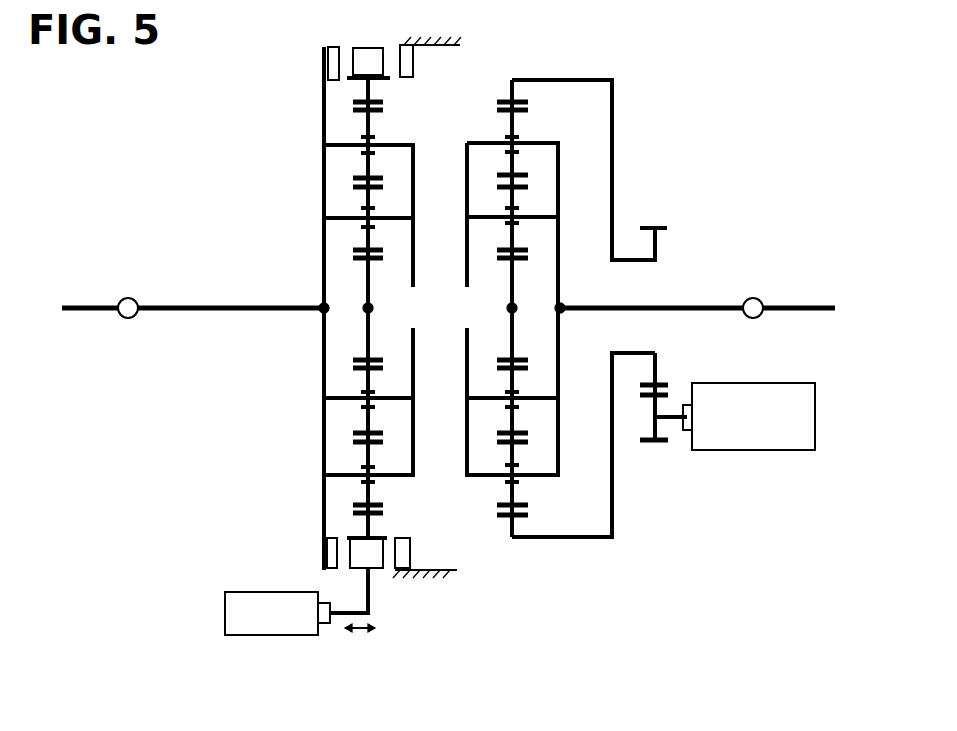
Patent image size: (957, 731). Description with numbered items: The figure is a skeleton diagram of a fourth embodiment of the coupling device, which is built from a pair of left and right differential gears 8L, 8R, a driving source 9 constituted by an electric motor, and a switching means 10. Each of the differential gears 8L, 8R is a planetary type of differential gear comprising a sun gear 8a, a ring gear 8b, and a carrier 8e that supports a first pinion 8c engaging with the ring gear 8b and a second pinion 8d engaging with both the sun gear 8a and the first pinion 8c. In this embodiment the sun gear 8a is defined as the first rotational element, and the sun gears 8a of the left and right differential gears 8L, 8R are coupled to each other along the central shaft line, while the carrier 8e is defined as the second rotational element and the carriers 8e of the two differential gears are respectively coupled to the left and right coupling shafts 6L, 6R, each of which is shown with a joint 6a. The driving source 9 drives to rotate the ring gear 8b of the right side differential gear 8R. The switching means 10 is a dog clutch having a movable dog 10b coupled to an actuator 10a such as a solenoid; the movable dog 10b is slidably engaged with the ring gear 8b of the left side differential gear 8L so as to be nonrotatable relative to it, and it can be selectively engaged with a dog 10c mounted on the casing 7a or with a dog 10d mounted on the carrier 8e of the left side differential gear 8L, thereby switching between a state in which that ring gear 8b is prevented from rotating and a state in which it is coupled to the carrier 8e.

The left coupling shaft 6L is at (93, 305).
The right coupling shaft 6R is at (800, 303).
The universal joint 6a is at (130, 320).
The casing 7a is at (445, 575).
The left side differential gear 8L is at (318, 108).
The right side differential gear 8R is at (614, 108).
The sun gear 8a is at (366, 285).
The ring gear 8b is at (385, 104).
The first pinion 8c is at (353, 107).
The second pinion 8d is at (353, 250).
The carrier 8e is at (324, 203).
The driving source 9 is at (745, 455).
The switching means 10 is at (357, 606).
The actuator 10a is at (258, 630).
The movable dog 10b is at (373, 560).
The dog 10c is at (405, 548).
The dog 10d is at (326, 552).